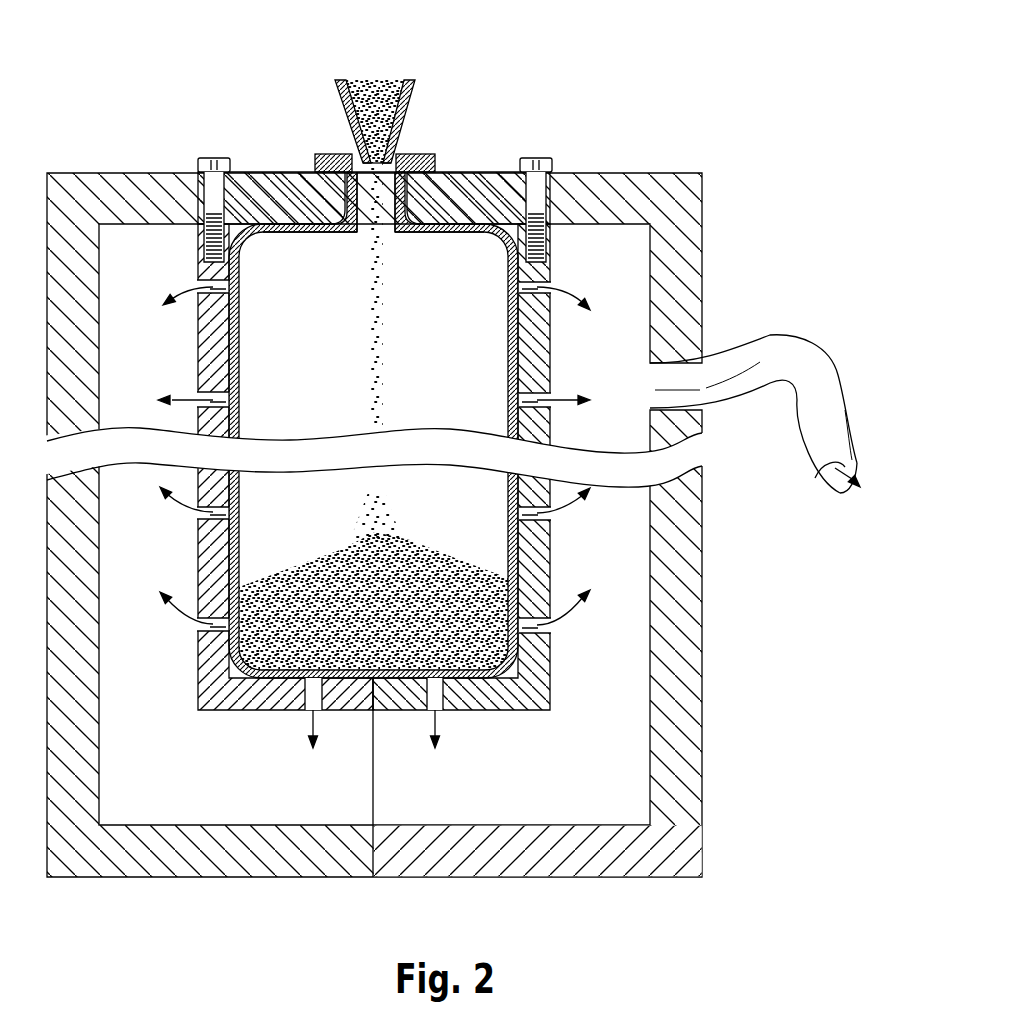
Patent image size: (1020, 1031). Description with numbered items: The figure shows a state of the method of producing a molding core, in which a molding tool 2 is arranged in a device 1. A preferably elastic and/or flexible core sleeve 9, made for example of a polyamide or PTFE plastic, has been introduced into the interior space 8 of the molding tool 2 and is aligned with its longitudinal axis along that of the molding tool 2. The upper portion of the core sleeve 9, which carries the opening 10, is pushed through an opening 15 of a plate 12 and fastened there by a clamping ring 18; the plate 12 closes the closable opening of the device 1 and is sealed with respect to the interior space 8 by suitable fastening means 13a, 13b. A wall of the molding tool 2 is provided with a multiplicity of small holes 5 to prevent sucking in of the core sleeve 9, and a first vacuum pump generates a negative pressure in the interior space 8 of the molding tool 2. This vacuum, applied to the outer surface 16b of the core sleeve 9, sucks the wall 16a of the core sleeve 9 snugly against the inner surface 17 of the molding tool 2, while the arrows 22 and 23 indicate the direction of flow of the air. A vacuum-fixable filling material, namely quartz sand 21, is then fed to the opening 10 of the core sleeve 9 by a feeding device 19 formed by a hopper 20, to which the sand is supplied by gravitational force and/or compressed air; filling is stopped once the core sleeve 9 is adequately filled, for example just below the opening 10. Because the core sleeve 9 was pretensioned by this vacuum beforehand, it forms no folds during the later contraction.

The device 1 is at (750, 112).
The molding tool 2 is at (246, 697).
The holes 5 is at (523, 613).
The interior space 8 is at (238, 232).
The core sleeve 9 is at (293, 222).
The opening 10 is at (404, 157).
The plate 12 is at (478, 196).
The fastening means 13a is at (548, 158).
The fastening means 13b is at (212, 158).
The opening of the plate 15 is at (360, 197).
The wall of the core sleeve 16a is at (197, 548).
The outer surface of the core sleeve 16b is at (230, 370).
The inner surface of the molding tool 17 is at (508, 333).
The clamping ring 18 is at (438, 162).
The feeding device 19 is at (427, 82).
The hopper 20 is at (433, 12).
The quartz sand 21 is at (398, 632).
The arrows 22 is at (188, 286).
The arrows 23 is at (827, 463).